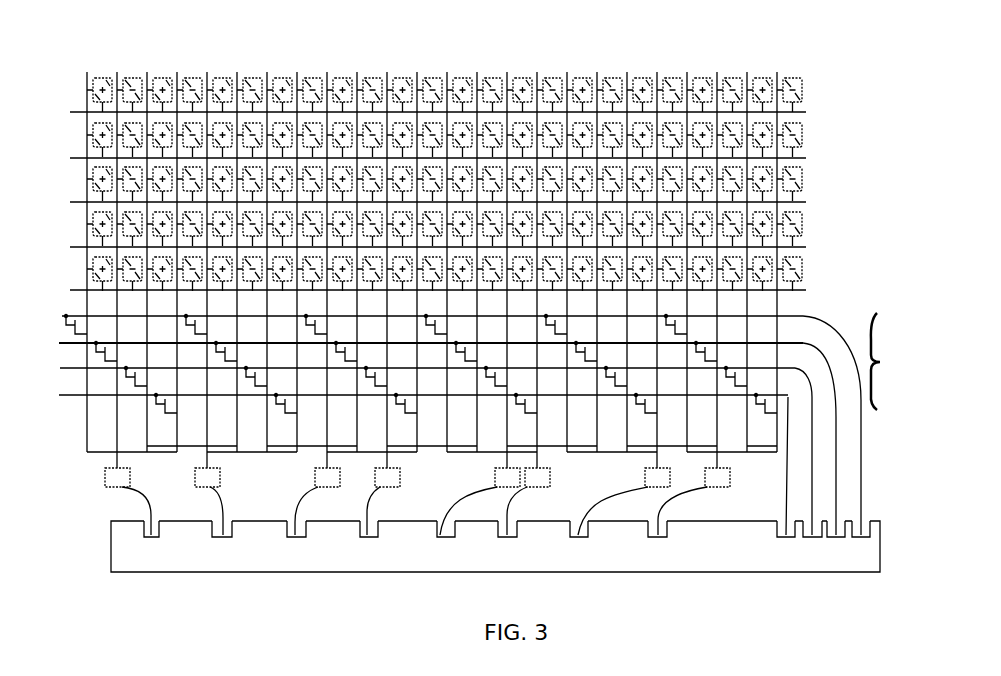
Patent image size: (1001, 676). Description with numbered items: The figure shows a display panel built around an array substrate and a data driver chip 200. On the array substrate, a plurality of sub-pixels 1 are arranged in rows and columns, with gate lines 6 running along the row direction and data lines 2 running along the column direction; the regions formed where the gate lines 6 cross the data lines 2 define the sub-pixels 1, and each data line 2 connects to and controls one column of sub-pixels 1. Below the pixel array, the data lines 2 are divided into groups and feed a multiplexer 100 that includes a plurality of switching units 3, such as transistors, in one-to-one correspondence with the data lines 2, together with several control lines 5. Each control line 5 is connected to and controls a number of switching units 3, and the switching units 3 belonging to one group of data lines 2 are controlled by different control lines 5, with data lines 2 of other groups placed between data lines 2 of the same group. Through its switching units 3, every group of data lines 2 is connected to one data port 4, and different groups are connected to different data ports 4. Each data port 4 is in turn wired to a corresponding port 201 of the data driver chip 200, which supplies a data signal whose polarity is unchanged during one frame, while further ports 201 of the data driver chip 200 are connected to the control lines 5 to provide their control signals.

The sub-pixel 1 is at (178, 80).
The data line 2 is at (87, 135).
The switching unit 3 is at (70, 330).
The data port 4 is at (105, 482).
The control line 5 is at (60, 395).
The gate line 6 is at (84, 112).
The multiplexer 100 is at (883, 362).
The data driver chip 200 is at (105, 537).
The port 201 is at (140, 524).